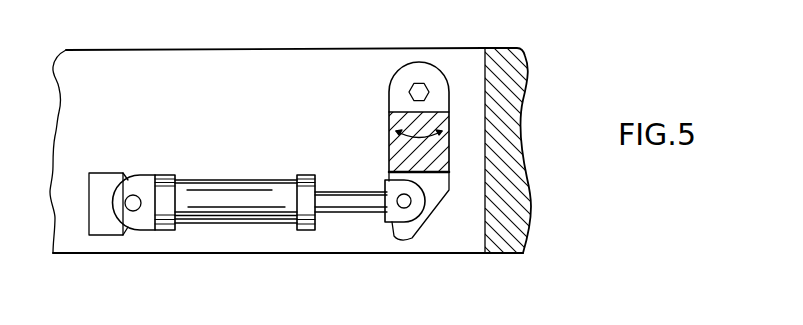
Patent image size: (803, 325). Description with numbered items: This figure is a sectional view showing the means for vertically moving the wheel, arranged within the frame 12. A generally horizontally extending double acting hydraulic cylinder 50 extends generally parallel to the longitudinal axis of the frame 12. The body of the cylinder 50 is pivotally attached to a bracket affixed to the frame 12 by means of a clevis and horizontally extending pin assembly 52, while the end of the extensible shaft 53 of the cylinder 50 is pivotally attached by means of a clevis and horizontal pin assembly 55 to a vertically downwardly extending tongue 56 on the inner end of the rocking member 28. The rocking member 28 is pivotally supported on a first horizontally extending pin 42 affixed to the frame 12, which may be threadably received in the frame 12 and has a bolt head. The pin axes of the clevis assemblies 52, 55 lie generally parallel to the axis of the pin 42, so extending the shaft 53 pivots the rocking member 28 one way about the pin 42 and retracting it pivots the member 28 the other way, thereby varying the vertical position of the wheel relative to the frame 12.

The frame 12 is at (508, 77).
The rocking member 28 is at (438, 158).
The first horizontally extending pin 42 is at (420, 87).
The double acting hydraulic cylinder 50 is at (227, 213).
The clevis and horizontally extending pin assembly 52 is at (136, 220).
The extensible shaft 53 is at (345, 204).
The clevis and horizontal pin assembly 55 is at (403, 210).
The tongue 56 is at (430, 196).